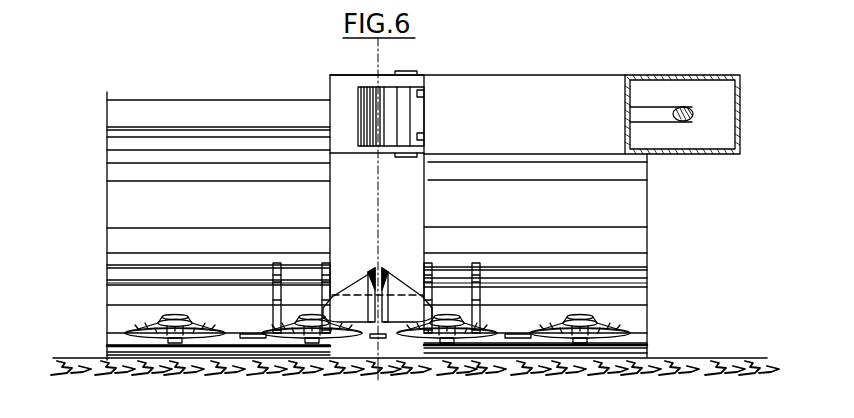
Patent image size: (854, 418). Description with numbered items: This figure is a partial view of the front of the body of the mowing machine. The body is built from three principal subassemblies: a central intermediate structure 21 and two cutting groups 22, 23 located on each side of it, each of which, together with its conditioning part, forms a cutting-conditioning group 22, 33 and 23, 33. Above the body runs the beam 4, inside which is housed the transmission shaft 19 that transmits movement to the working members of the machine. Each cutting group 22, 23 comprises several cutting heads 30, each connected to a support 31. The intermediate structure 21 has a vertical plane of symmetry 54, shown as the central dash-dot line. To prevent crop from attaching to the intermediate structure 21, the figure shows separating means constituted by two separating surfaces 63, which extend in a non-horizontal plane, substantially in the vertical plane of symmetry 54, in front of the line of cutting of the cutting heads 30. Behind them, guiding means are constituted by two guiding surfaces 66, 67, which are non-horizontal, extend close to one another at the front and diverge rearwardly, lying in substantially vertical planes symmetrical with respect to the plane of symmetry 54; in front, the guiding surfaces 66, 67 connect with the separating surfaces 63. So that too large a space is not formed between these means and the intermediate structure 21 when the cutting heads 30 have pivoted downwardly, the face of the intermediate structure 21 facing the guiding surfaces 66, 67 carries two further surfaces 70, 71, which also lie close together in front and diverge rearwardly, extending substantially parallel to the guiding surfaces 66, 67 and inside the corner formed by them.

The beam 4 is at (602, 87).
The transmission shaft 19 is at (652, 117).
The intermediate structure 21 is at (342, 97).
The cutting group 22 is at (167, 152).
The cutting group 23 is at (613, 206).
The conditioning group 33 is at (445, 205).
The cutting heads 30 is at (280, 337).
The support 31 is at (125, 283).
The vertical plane of symmetry 54 is at (378, 58).
The separating surfaces 63 is at (372, 272).
The guiding surface 66 is at (363, 308).
The guiding surface 67 is at (393, 308).
The surface 70 is at (367, 265).
The surface 71 is at (392, 265).